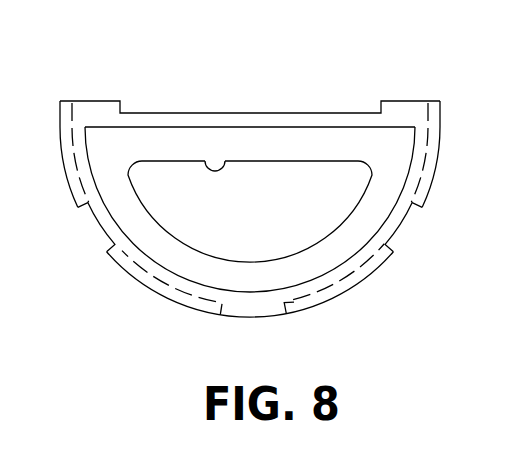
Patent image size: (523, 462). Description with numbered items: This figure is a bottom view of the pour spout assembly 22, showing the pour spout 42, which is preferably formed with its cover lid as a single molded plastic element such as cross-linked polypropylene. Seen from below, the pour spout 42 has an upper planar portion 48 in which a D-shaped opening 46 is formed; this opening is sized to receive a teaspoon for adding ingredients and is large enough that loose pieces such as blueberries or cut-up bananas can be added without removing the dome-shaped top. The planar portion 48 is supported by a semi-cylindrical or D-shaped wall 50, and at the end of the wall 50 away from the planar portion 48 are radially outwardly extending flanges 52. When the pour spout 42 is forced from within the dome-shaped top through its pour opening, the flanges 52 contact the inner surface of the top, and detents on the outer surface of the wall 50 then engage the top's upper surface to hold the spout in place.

The pour spout assembly 22 is at (395, 278).
The pour spout 42 is at (152, 293).
The D-shaped opening 46 is at (212, 168).
The upper planar portion 48 is at (283, 138).
The D-shaped wall 50 is at (403, 220).
The flanges 52 is at (66, 118).